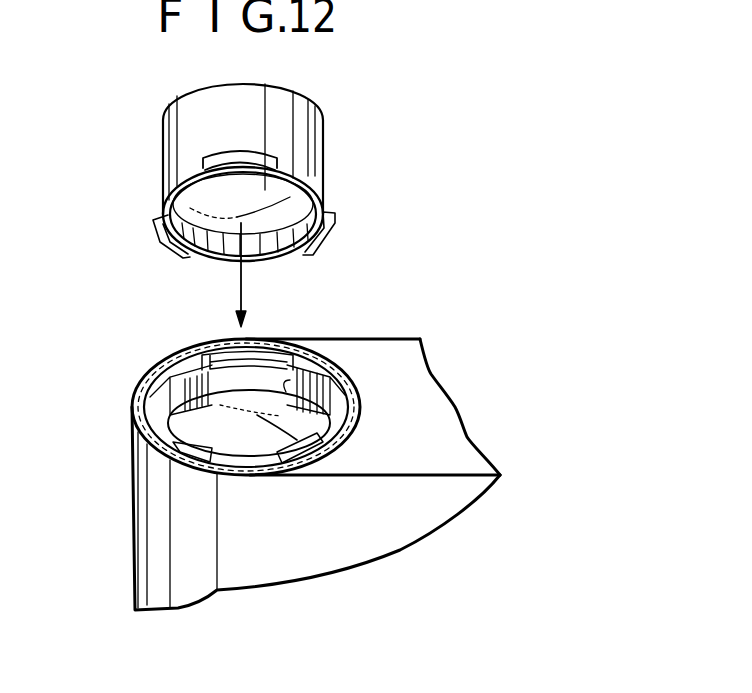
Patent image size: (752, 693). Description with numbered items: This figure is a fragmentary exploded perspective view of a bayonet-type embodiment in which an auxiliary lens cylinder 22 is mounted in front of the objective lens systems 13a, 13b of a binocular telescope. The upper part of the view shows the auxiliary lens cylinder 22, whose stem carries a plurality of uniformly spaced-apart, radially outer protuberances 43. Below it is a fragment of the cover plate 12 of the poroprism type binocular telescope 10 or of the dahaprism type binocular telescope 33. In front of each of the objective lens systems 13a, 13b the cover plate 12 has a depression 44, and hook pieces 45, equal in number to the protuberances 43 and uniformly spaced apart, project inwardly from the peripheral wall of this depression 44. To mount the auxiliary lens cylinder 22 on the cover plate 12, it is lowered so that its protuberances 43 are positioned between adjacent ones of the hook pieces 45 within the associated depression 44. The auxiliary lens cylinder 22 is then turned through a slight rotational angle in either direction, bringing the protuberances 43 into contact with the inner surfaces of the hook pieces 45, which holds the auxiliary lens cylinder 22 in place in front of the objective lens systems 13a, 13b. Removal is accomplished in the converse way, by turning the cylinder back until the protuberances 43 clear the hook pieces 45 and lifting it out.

The auxiliary lens cylinder 22 is at (303, 142).
The protuberances 43 is at (277, 162).
The hook pieces 45 is at (268, 360).
The depression 44 is at (287, 362).
The cover plate 12 is at (420, 388).
The binocular telescope 10 is at (380, 474).
The dahaprism type binocular telescope 33 is at (481, 435).
The objective lens system 13a is at (280, 528).
The objective lens system 13b is at (245, 432).